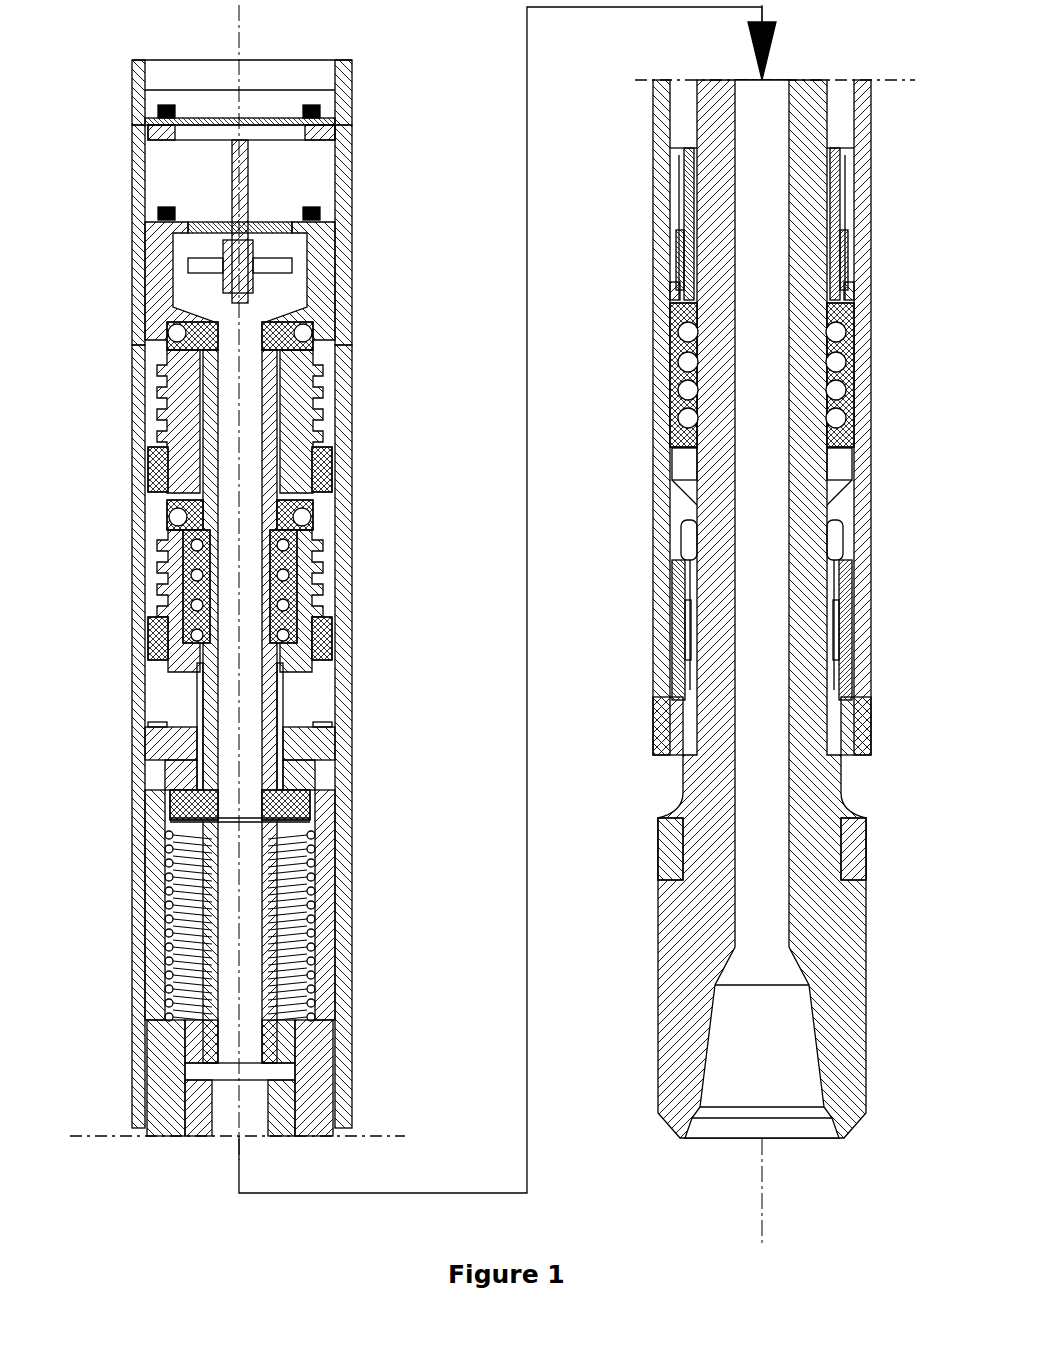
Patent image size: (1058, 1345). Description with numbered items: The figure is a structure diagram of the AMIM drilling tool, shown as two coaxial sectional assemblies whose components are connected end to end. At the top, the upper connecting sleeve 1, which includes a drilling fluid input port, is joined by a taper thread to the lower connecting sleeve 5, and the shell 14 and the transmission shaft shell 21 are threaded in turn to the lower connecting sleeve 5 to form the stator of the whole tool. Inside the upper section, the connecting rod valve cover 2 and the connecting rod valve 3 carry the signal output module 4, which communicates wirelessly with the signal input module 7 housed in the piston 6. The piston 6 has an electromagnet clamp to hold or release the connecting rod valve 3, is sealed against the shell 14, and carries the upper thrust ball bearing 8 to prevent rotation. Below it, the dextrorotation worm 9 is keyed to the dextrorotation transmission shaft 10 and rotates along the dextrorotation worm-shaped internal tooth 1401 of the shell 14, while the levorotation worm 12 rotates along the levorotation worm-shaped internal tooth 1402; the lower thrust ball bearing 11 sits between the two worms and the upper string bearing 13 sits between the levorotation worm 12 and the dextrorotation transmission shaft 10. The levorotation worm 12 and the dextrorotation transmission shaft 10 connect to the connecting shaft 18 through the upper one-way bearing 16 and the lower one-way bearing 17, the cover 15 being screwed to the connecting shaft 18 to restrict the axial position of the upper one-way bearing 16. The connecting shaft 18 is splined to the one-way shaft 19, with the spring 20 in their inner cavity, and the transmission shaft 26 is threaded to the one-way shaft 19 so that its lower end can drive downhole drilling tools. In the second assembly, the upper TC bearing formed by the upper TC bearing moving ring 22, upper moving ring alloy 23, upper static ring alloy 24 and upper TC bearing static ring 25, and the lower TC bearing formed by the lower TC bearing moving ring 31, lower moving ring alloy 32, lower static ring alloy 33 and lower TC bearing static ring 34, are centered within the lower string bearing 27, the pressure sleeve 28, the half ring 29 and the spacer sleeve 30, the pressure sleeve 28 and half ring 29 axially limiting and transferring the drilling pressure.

The upper connecting sleeve 1 is at (134, 90).
The connecting rod valve cover 2 is at (150, 118).
The connecting rod valve 3 is at (160, 128).
The signal output module 4 is at (175, 140).
The lower connecting sleeve 5 is at (134, 203).
The piston 6 is at (150, 262).
The signal input module 7 is at (190, 267).
The upper thrust ball bearing 8 is at (160, 328).
The dextrorotation worm 9 is at (168, 418).
The dextrorotation worm-shaped internal tooth 1401 is at (145, 458).
The dextrorotation transmission shaft 10 is at (197, 493).
The lower thrust ball bearing 11 is at (165, 520).
The levorotation worm 12 is at (165, 550).
The upper string bearing 13 is at (182, 590).
The levorotation worm-shaped internal tooth 1402 is at (150, 633).
The shell 14 is at (135, 680).
The cover 15 is at (147, 752).
The upper one-way bearing 16 is at (175, 777).
The lower one-way bearing 17 is at (175, 807).
The connecting shaft 18 is at (205, 878).
The one-way shaft 19 is at (147, 938).
The spring 20 is at (182, 982).
The transmission shaft shell 21 is at (868, 127).
The upper TC bearing moving ring 22 is at (827, 172).
The upper moving ring alloy 23 is at (830, 202).
The upper static ring alloy 24 is at (833, 238).
The upper TC bearing static ring 25 is at (840, 277).
The transmission shaft 26 is at (812, 342).
The lower string bearing 27 is at (857, 402).
The pressure sleeve 28 is at (833, 472).
The half ring 29 is at (855, 488).
The spacer sleeve 30 is at (840, 535).
The lower TC bearing moving ring 31 is at (840, 602).
The lower moving ring alloy 32 is at (842, 653).
The lower static ring alloy 33 is at (850, 670).
The lower TC bearing static ring 34 is at (860, 723).